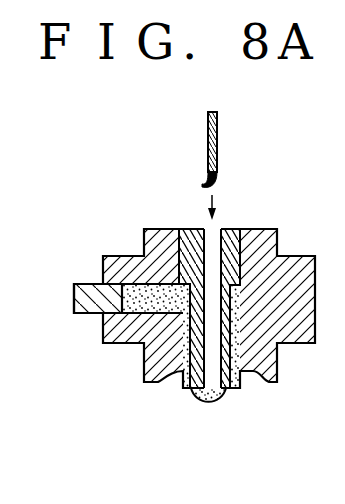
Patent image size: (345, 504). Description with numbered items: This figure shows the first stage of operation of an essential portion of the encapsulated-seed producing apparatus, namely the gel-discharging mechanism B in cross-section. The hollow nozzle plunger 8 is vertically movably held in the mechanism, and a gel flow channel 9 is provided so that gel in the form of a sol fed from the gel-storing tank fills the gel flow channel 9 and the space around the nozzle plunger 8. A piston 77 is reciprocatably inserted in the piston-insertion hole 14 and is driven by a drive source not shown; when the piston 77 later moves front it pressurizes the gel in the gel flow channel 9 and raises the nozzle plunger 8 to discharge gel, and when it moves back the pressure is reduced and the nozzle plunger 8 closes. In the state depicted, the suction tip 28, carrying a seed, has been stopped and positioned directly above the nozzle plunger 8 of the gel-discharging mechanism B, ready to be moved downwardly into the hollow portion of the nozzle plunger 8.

The nozzle plunger 8 is at (190, 340).
The gel flow channel 9 is at (172, 295).
The piston-insertion hole 14 is at (140, 291).
The suction tip 28 is at (218, 144).
The piston 77 is at (93, 314).
The gel discharging mechanism B is at (288, 452).